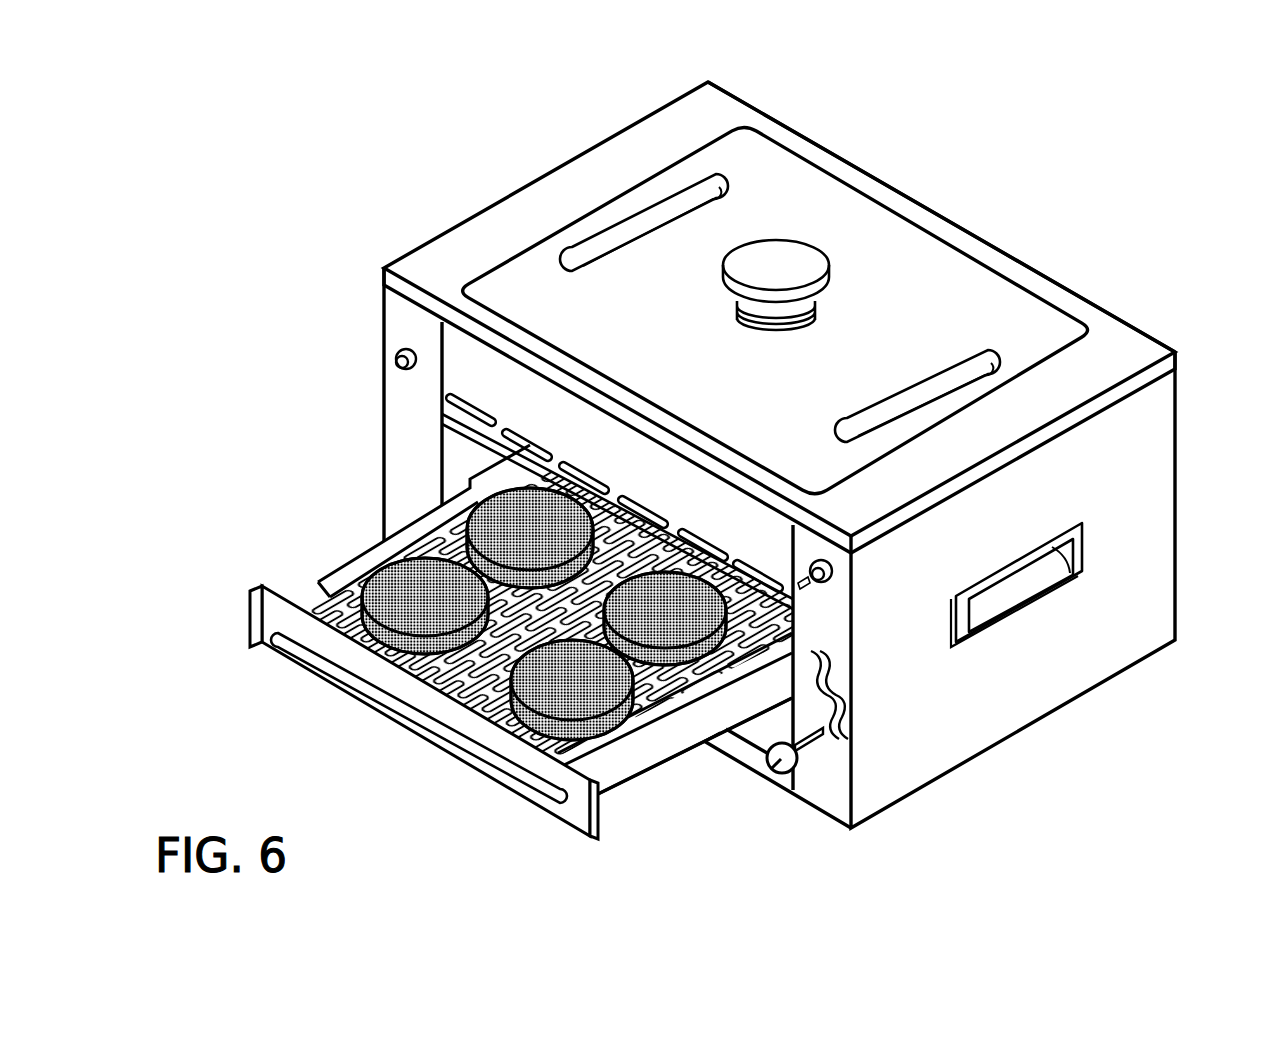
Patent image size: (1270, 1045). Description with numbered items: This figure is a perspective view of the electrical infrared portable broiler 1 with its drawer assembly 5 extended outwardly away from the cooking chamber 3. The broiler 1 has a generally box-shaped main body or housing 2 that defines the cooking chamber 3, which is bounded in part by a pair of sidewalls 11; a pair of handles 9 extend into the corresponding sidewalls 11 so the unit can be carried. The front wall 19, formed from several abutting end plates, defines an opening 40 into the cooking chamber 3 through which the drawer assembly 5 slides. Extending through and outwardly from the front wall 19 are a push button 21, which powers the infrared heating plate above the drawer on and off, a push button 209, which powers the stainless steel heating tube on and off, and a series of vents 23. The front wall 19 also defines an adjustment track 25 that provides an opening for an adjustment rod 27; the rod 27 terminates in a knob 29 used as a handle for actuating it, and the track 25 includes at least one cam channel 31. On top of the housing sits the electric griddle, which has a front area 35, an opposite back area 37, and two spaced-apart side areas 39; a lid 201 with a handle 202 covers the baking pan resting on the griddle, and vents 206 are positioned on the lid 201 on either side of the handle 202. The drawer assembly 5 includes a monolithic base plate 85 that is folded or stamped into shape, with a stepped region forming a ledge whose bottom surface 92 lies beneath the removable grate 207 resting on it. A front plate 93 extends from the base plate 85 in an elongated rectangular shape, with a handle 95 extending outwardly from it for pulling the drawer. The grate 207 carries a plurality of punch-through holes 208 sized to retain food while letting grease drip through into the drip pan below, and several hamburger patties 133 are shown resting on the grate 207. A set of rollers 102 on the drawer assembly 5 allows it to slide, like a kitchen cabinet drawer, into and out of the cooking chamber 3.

The electrical infrared portable broiler 1 is at (372, 174).
The main body or housing 2 is at (482, 194).
The side areas 39 is at (579, 169).
The lid 201 is at (868, 230).
The vents 206 is at (720, 187).
The handle 202 is at (797, 268).
The back area 37 is at (1067, 272).
The front area 35 is at (448, 290).
The front wall 19 is at (392, 318).
The push button 209 is at (394, 362).
The vents 23 is at (488, 413).
The cooking chamber 3 is at (449, 437).
The opening 40 is at (617, 491).
The hamburger patties 133 is at (425, 565).
The base plate 85 is at (340, 546).
The grate 207 is at (301, 574).
The drawer assembly 5 is at (234, 605).
The handle 95 is at (322, 686).
The front plate 93 is at (407, 705).
The bottom surface 92 is at (655, 748).
The punch-through holes 208 is at (731, 638).
The rollers 102 is at (788, 702).
The knob 29 is at (773, 767).
The adjustment rod 27 is at (800, 762).
The cam channel 31 is at (827, 652).
The adjustment track 25 is at (863, 692).
The push button 21 is at (832, 594).
The handles 9 is at (1000, 600).
The sidewalls 11 is at (1161, 553).